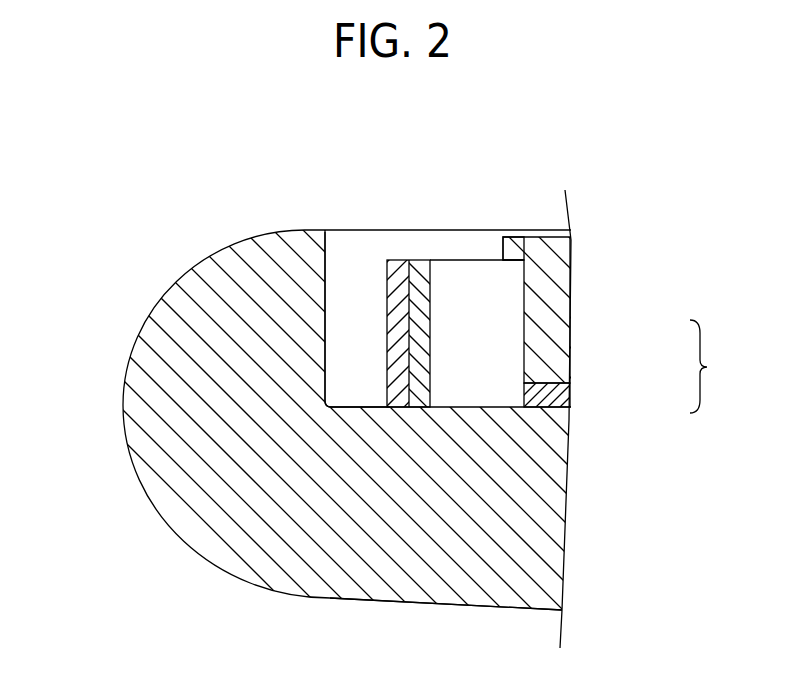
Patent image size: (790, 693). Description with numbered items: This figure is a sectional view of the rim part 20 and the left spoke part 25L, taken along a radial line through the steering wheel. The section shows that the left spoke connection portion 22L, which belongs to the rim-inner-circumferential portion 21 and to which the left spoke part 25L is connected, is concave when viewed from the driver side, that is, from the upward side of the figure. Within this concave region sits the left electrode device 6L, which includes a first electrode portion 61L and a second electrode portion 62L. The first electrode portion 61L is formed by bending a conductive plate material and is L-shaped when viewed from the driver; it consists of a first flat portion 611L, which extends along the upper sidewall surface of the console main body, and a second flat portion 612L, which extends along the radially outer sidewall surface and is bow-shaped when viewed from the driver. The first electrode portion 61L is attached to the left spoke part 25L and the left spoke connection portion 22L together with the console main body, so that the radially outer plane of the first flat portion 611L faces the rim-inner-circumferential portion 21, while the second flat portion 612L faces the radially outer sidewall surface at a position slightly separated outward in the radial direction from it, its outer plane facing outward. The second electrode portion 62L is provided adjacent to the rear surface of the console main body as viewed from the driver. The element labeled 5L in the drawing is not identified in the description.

The rim part 20 is at (128, 405).
The rim-inner-circumferential portion 21 is at (395, 199).
The left spoke connection portion 22L is at (360, 408).
The left spoke part 25L is at (503, 597).
The outer side surface 5L is at (570, 273).
The second flat portion 612L is at (420, 265).
The first flat portion 611L is at (513, 272).
The first electrode portion 61L is at (507, 342).
The second electrode portion 62L is at (567, 395).
The left electrode device 6L is at (707, 367).